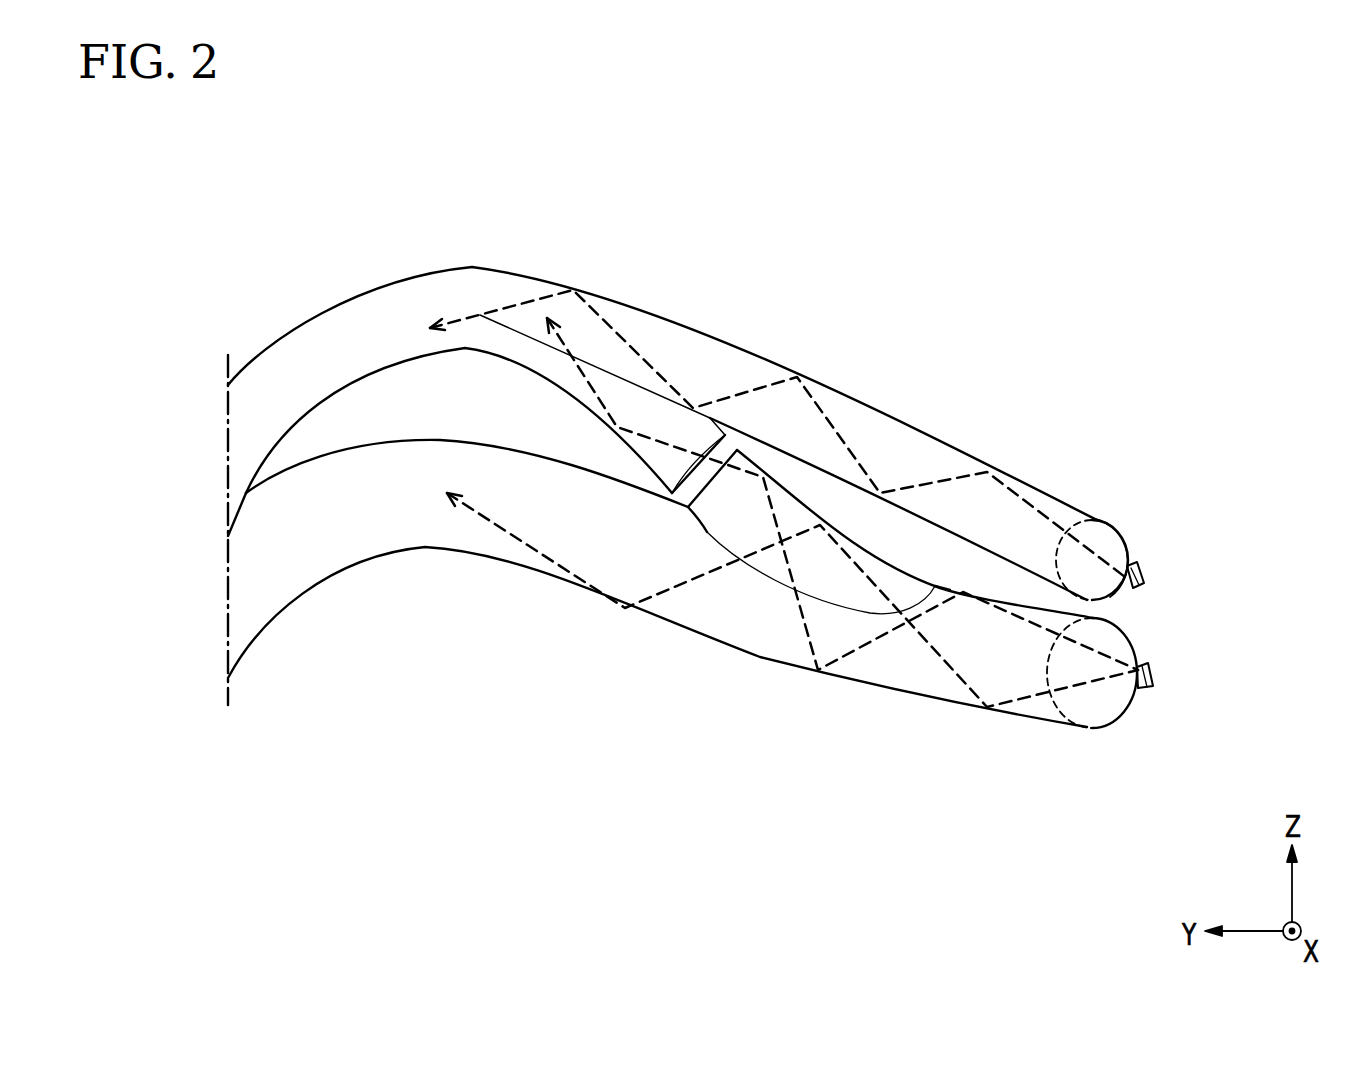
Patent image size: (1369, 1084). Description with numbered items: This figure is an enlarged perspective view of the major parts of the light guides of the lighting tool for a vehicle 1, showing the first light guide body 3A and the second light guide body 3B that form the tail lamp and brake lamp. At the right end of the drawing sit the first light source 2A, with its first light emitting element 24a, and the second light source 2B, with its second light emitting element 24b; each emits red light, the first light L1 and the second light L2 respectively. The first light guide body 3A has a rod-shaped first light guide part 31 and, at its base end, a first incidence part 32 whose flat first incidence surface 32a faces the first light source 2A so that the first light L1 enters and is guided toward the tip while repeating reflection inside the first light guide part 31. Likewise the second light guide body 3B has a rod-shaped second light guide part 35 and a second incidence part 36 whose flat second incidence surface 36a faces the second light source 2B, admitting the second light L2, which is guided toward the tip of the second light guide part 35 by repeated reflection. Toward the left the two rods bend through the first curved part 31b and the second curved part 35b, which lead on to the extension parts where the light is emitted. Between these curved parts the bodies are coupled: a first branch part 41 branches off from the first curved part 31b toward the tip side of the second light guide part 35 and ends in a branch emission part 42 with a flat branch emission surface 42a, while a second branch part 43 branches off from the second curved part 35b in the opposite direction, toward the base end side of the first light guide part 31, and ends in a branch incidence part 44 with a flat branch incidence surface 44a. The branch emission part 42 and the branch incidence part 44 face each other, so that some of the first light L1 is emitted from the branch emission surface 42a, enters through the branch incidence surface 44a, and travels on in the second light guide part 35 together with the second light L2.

The lighting tool for a vehicle 1 is at (297, 134).
The first light source 2A is at (1231, 665).
The second light source 2B is at (1226, 586).
The first light guide body 3A is at (552, 598).
The second light guide body 3B is at (724, 307).
The first light emitting element 24a is at (1153, 672).
The second light emitting element 24b is at (1145, 584).
The first light guide part 31 is at (657, 640).
The first curved part 31b is at (418, 550).
The first incidence part 32 is at (1186, 682).
The first incidence surface 32a is at (1117, 698).
The second light guide part 35 is at (662, 340).
The second curved part 35b is at (423, 270).
The second incidence part 36 is at (1190, 551).
The second incidence surface 36a is at (1115, 548).
The first branch part 41 is at (790, 512).
The branch emission part 42 is at (782, 385).
The branch emission surface 42a is at (730, 447).
The second branch part 43 is at (645, 468).
The branch incidence part 44 is at (810, 600).
The branch incidence surface 44a is at (697, 468).
The first light L1 is at (583, 372).
The second light L2 is at (650, 366).